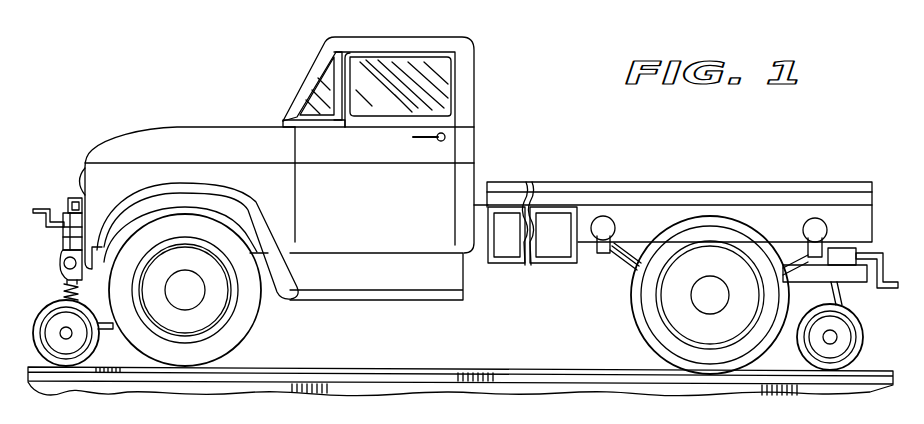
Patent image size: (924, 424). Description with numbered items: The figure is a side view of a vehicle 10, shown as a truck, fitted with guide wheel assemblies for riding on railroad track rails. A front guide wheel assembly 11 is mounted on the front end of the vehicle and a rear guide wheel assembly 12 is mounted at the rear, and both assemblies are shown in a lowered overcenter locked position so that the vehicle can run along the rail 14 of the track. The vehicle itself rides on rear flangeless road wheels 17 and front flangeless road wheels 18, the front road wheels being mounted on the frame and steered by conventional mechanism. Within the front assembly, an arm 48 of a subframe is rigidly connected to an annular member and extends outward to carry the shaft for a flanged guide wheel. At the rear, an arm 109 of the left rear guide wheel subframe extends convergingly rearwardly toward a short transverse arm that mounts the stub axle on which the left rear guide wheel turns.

The vehicle 10 is at (484, 161).
The front guide wheel assembly 11 is at (37, 320).
The rear guide wheel assembly 12 is at (870, 348).
The rail 14 is at (510, 368).
The rear flangeless road wheel 17 is at (655, 325).
The front flangeless road wheel 18 is at (240, 337).
The arm 48 is at (110, 329).
The arm 109 is at (800, 282).